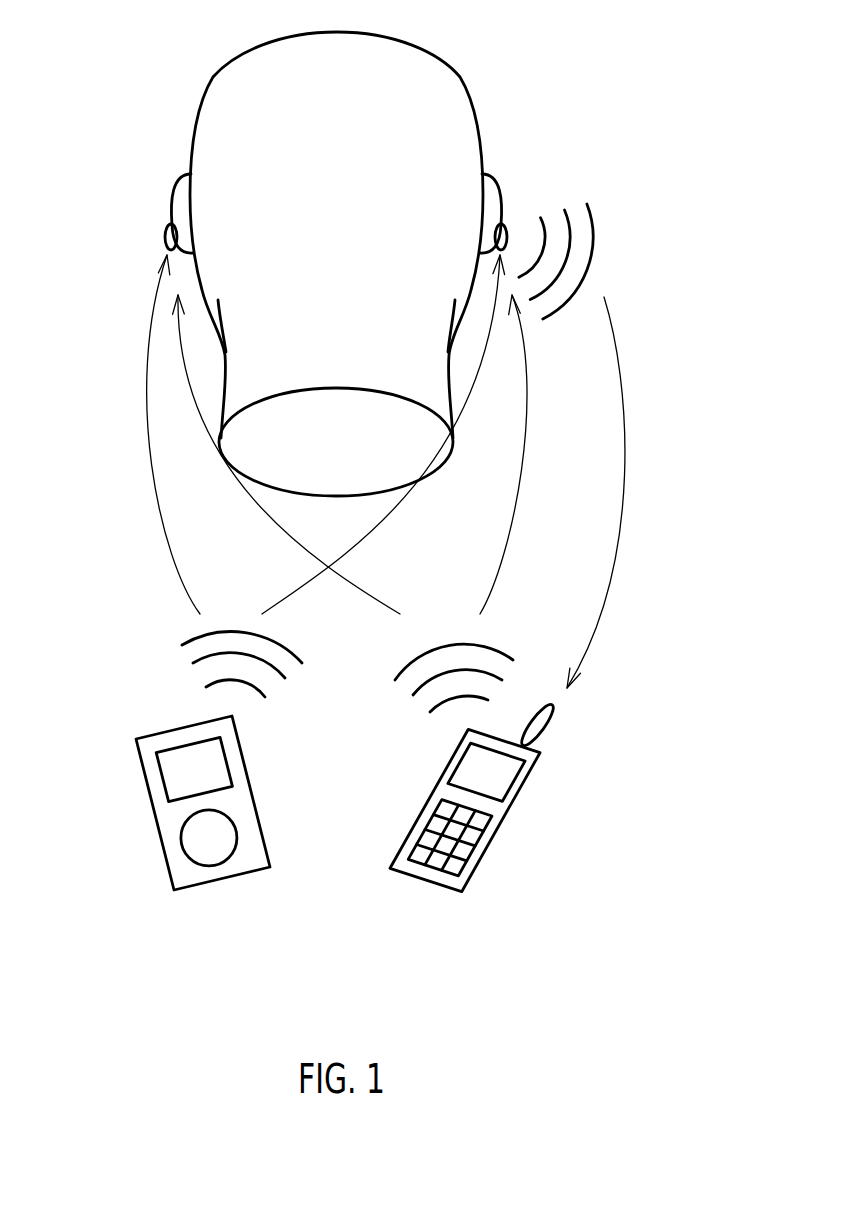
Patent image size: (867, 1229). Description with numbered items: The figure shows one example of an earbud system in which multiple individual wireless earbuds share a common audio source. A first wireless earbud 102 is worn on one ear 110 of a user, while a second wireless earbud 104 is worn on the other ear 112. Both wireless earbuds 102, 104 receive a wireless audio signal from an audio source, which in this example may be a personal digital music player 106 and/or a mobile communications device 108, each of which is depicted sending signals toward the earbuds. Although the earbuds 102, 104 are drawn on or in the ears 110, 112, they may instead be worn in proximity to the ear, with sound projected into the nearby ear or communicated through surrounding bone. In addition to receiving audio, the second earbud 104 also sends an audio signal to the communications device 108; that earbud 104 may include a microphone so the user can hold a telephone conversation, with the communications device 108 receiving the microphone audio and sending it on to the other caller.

The first wireless earbud 102 is at (167, 233).
The second wireless earbud 104 is at (503, 220).
The personal digital music player 106 is at (163, 867).
The mobile communications device 108 is at (480, 872).
The ear 110 is at (178, 183).
The ear 112 is at (500, 183).